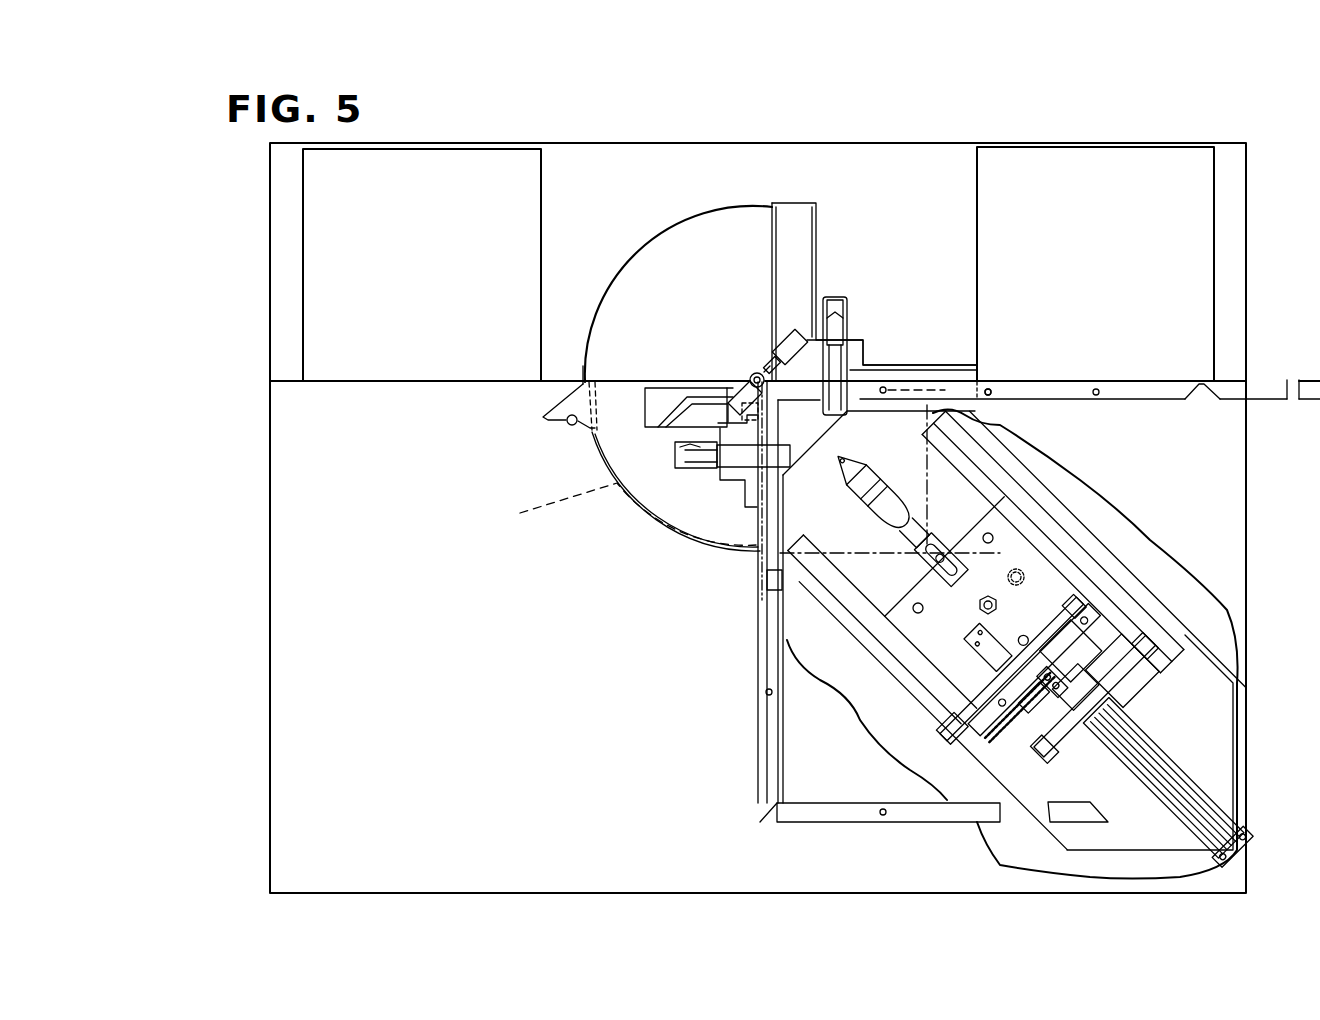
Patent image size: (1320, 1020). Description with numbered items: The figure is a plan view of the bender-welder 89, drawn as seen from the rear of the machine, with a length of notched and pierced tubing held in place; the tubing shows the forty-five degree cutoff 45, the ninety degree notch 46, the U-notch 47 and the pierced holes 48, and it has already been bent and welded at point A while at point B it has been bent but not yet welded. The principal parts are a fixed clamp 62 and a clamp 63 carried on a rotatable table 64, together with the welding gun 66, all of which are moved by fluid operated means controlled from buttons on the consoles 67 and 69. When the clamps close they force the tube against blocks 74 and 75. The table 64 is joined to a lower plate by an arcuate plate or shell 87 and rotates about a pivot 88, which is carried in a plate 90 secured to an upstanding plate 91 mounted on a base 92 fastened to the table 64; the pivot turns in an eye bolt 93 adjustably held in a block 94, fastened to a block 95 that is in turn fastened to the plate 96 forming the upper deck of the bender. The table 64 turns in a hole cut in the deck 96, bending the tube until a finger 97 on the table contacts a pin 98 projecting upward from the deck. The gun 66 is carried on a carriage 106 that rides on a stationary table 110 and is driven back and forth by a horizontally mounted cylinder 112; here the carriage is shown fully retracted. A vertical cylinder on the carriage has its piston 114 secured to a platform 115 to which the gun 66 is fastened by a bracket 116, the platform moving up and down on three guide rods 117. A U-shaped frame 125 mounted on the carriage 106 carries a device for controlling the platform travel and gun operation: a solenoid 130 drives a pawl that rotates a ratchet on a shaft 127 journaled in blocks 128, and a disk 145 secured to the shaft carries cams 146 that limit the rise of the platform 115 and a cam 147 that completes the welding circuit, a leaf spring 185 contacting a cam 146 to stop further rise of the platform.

The forty-five degree cutoff 45 is at (1319, 412).
The ninety degree notch 46 is at (1200, 392).
The U-notch 47 is at (770, 580).
The pierced holes 48 is at (993, 395).
The fixed clamp 62 is at (838, 353).
The clamp 63 is at (740, 455).
The rotatable table 64 is at (648, 498).
The welding electrode or gun 66 is at (862, 467).
The console 67 is at (465, 155).
The console 69 is at (1108, 147).
The block 74 is at (895, 368).
The block 75 is at (738, 503).
The arcuate plate or shell 87 is at (626, 514).
The pivot 88 is at (750, 372).
The bender-welder 89 is at (262, 484).
The plate 90 is at (727, 395).
The upstanding plate 91 is at (687, 397).
The base 92 is at (650, 385).
The eye bolt 93 is at (770, 360).
The block 94 is at (790, 335).
The block 95 is at (813, 248).
The plate 96 is at (722, 142).
The finger 97 is at (550, 407).
The pin 98 is at (568, 424).
The carriage 106 is at (1168, 680).
The stationary table 110 is at (868, 645).
The cylinder 112 is at (1175, 815).
The piston 114 is at (998, 603).
The platform 115 is at (1022, 634).
The bracket 116 is at (930, 530).
The guide rods 117 is at (915, 605).
The U-shaped frame 125 is at (1130, 700).
The shaft 127 is at (975, 737).
The blocks 128 is at (992, 768).
The solenoid 130 is at (1118, 640).
The disk 145 is at (940, 742).
The cams 146 is at (1058, 623).
The cam 147 is at (1000, 675).
The leaf spring 185 is at (985, 648).
The point A is at (790, 793).
The point B is at (793, 413).